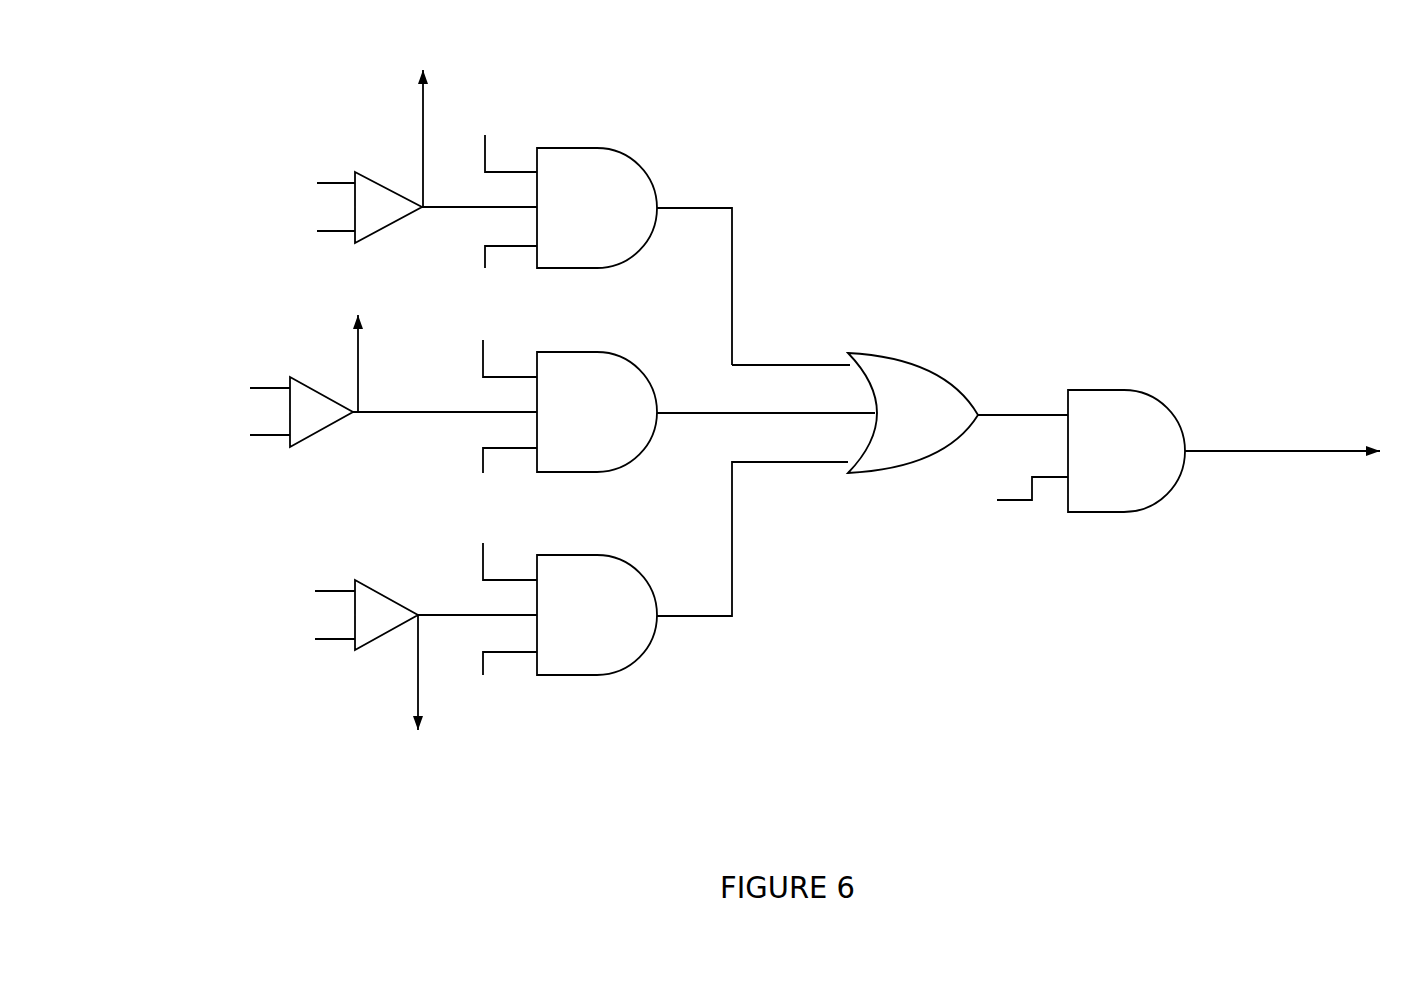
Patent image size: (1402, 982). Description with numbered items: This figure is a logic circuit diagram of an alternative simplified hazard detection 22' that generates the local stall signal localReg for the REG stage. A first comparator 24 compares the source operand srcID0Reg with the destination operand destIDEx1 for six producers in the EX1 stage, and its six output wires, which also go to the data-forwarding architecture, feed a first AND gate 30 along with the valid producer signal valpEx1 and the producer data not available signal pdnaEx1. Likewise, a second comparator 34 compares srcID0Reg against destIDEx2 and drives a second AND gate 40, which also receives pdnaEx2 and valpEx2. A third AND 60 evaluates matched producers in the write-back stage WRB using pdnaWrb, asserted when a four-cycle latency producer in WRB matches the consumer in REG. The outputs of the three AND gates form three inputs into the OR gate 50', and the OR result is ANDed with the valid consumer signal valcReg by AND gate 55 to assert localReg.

The alternative simplified hazard detection 22' is at (764, 444).
The first comparator 24 is at (375, 177).
The first AND gate 30 is at (630, 157).
The second comparator 34 is at (302, 450).
The second AND gate 40 is at (643, 450).
The OR gate 50' is at (900, 353).
The AND gate 55 is at (1120, 512).
The third AND 60 is at (602, 677).